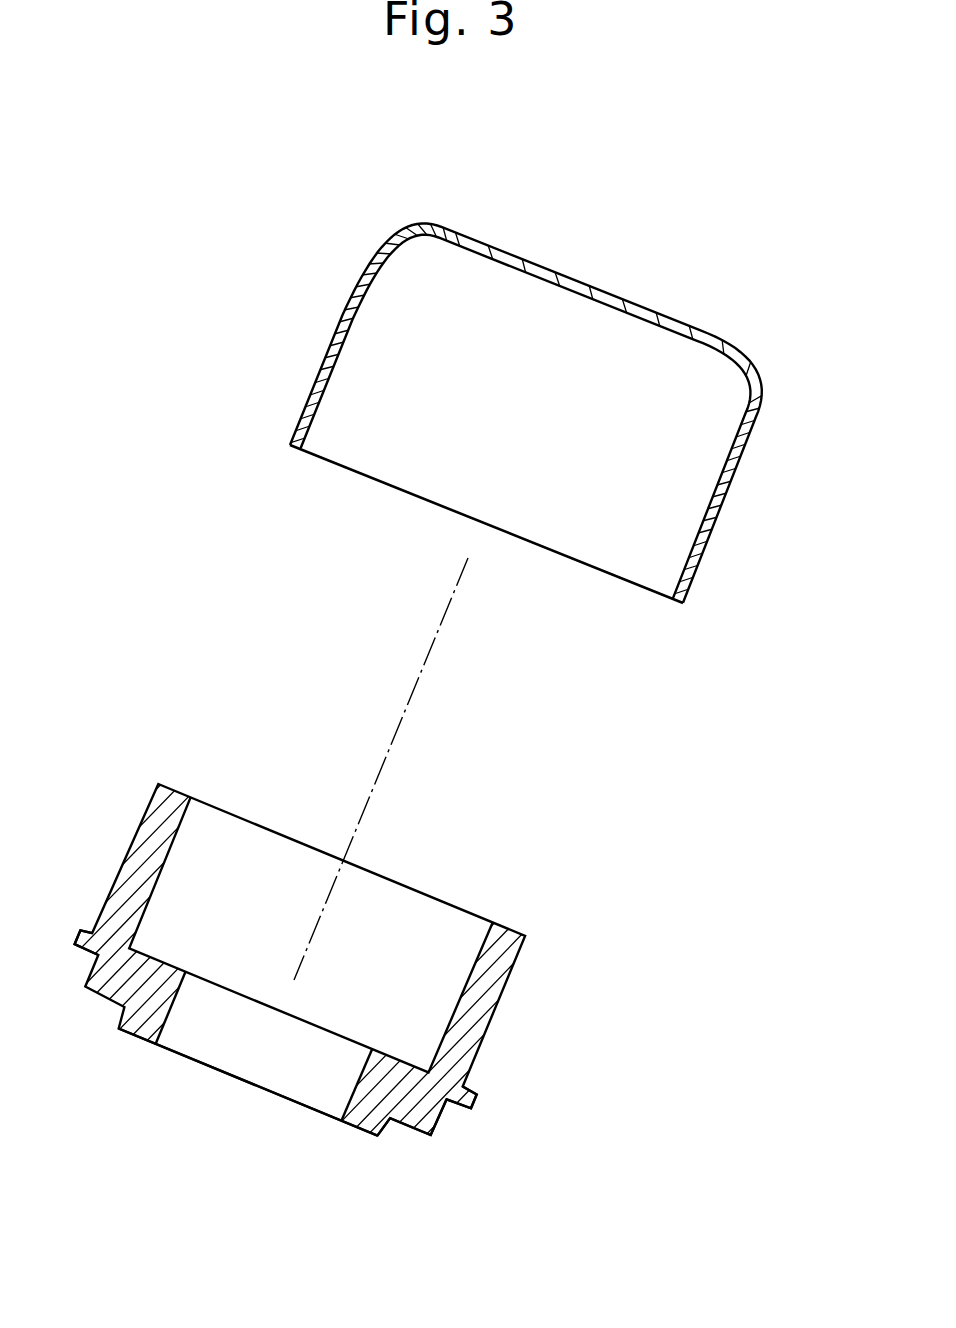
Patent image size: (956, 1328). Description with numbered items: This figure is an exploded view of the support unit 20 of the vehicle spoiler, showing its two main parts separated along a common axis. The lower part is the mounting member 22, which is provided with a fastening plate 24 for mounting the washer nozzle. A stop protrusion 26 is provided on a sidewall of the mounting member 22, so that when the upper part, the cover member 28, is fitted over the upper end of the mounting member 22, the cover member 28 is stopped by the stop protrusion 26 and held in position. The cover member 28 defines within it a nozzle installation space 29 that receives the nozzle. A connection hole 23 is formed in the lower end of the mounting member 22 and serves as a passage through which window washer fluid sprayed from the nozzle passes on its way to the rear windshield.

The support unit 20 is at (176, 475).
The mounting member 22 is at (546, 1024).
The connection hole 23 is at (284, 1064).
The fastening plate 24 is at (387, 1087).
The stop protrusion 26 is at (473, 1102).
The cover member 28 is at (722, 494).
The nozzle installation space 29 is at (607, 452).